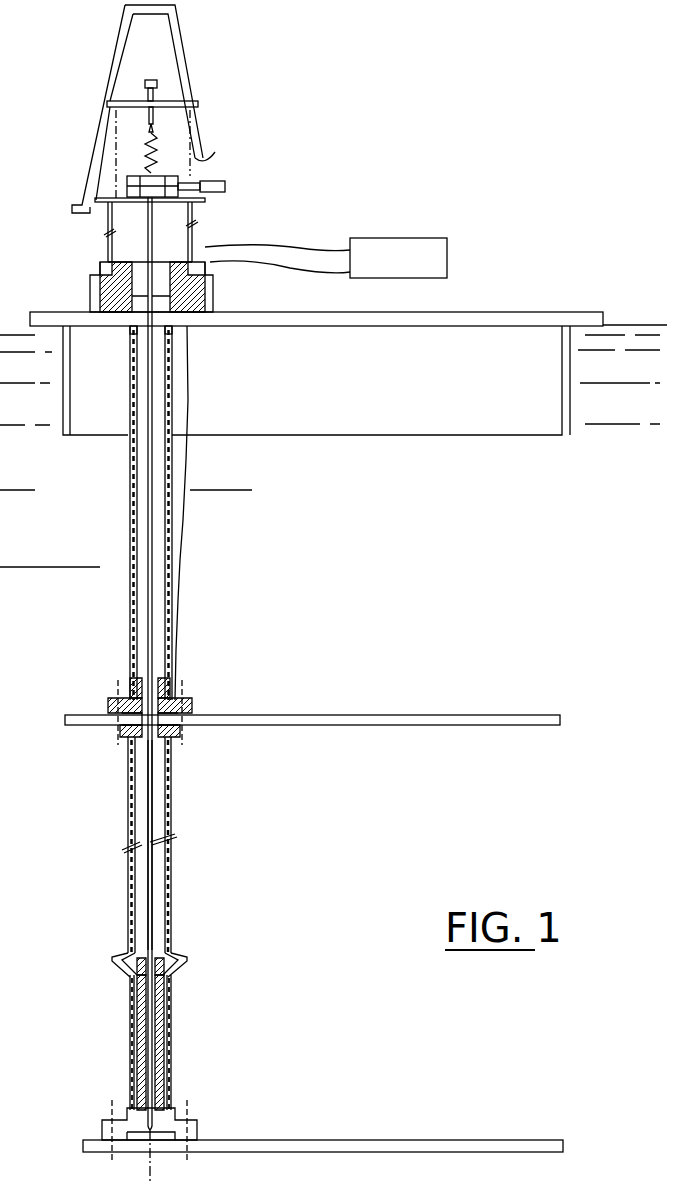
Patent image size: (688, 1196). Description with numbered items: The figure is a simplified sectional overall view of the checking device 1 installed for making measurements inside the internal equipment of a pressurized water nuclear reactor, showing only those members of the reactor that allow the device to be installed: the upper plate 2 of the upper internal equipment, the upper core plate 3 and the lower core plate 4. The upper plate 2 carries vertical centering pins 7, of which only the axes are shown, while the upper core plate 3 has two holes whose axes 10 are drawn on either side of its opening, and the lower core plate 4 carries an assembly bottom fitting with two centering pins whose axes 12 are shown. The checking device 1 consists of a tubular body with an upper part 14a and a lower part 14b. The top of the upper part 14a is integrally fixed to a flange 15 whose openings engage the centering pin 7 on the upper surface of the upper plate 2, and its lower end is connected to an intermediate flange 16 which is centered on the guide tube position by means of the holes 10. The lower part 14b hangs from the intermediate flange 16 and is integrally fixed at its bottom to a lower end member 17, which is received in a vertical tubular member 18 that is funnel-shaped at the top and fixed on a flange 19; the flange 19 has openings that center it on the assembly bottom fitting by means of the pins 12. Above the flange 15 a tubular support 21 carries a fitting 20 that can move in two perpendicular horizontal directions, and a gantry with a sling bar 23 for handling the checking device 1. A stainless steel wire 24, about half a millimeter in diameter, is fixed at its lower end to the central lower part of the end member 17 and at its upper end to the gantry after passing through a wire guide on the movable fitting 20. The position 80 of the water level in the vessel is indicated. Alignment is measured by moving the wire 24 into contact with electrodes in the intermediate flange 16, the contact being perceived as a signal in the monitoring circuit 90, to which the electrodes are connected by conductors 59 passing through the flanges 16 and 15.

The checking device 1 is at (172, 548).
The upper plate 2 is at (490, 312).
The upper core plate 3 is at (400, 715).
The lower core plate 4 is at (405, 1140).
The vertical centering pins 7 is at (98, 265).
The holes 10 is at (118, 695).
The pins 12 is at (112, 1113).
The upper part of tubular body 14a is at (130, 630).
The lower part of tubular body 14b is at (128, 780).
The flange 15 is at (90, 292).
The intermediate flange 16 is at (192, 708).
The lower end member 17 is at (172, 957).
The tubular member 18 is at (172, 998).
The flange 19 is at (200, 1128).
The fitting 20 is at (172, 178).
The tubular support 21 is at (195, 203).
The sling bar 23 is at (118, 52).
The stainless steel wire 24 is at (152, 805).
The conductors 59 is at (186, 462).
The position of the water level 80 is at (630, 325).
The monitoring circuit 90 is at (326, 258).